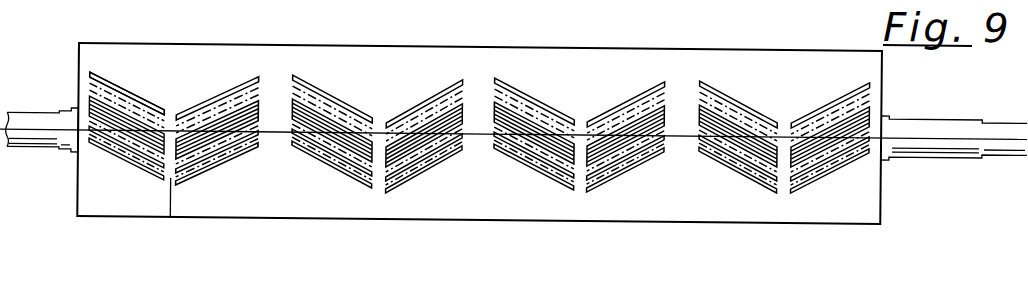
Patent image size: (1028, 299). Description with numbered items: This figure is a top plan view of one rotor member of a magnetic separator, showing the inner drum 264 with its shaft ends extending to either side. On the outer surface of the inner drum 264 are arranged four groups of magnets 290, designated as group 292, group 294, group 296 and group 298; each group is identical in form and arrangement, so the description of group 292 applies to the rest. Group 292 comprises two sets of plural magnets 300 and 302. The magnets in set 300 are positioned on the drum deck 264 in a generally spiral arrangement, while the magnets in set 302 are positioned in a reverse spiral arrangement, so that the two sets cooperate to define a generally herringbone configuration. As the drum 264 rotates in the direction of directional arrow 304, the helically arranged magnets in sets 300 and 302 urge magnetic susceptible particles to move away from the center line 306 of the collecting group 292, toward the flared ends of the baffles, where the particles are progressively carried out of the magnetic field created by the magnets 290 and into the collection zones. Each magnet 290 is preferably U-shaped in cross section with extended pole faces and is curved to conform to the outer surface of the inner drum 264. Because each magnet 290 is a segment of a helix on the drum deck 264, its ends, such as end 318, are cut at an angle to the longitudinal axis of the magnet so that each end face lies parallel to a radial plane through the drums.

The inner drum 264 is at (497, 211).
The magnets 290 is at (456, 159).
The first magnet group 292 is at (169, 153).
The second magnet group 294 is at (397, 113).
The third magnet group 296 is at (600, 110).
The fourth magnet group 298 is at (800, 113).
The first set of plural magnets 300 is at (161, 178).
The second set of plural magnets 302 is at (217, 171).
The directional arrow 304 is at (43, 162).
The center line 306 is at (172, 216).
The magnet end 318 is at (260, 140).